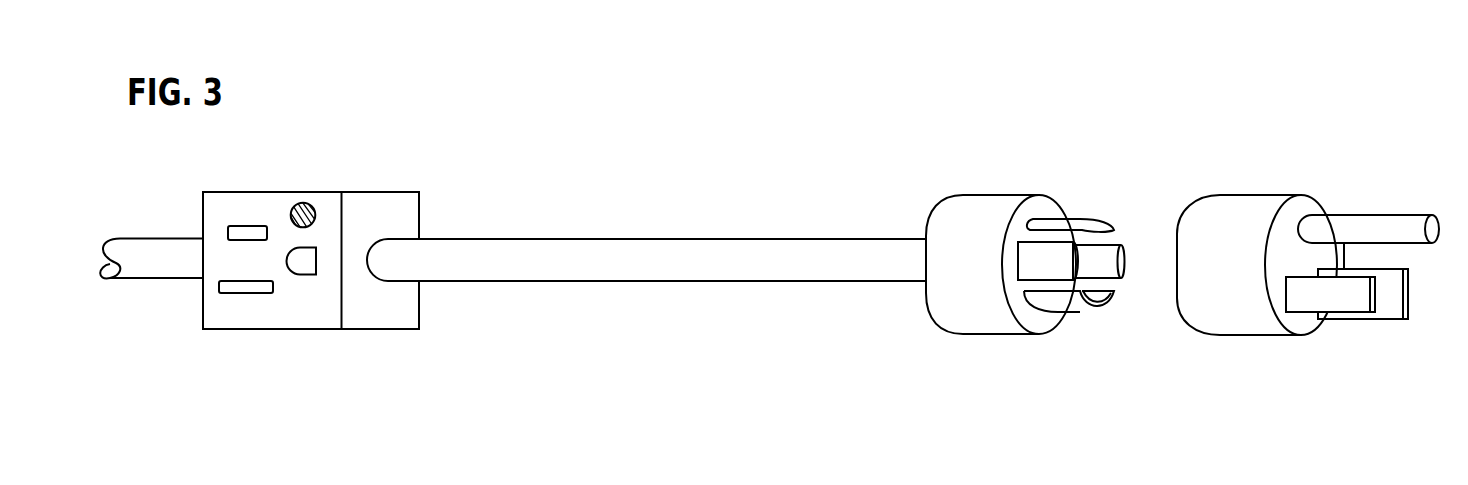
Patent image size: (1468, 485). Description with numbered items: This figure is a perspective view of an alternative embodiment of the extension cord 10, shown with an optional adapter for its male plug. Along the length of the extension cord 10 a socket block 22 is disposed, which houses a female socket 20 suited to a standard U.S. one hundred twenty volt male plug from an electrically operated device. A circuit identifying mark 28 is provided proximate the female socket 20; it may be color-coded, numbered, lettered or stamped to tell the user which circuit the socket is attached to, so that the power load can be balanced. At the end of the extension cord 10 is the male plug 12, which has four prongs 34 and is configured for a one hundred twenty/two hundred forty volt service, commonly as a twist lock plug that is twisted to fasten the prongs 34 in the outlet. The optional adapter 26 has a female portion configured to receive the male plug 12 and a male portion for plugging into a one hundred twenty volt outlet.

The extension cord 10 is at (738, 233).
The male plug 12 is at (1007, 335).
The female socket 20 is at (256, 299).
The socket block 22 is at (316, 329).
The adapter 26 is at (1262, 336).
The circuit identifying mark 28 is at (303, 203).
The prongs 34 is at (1079, 224).